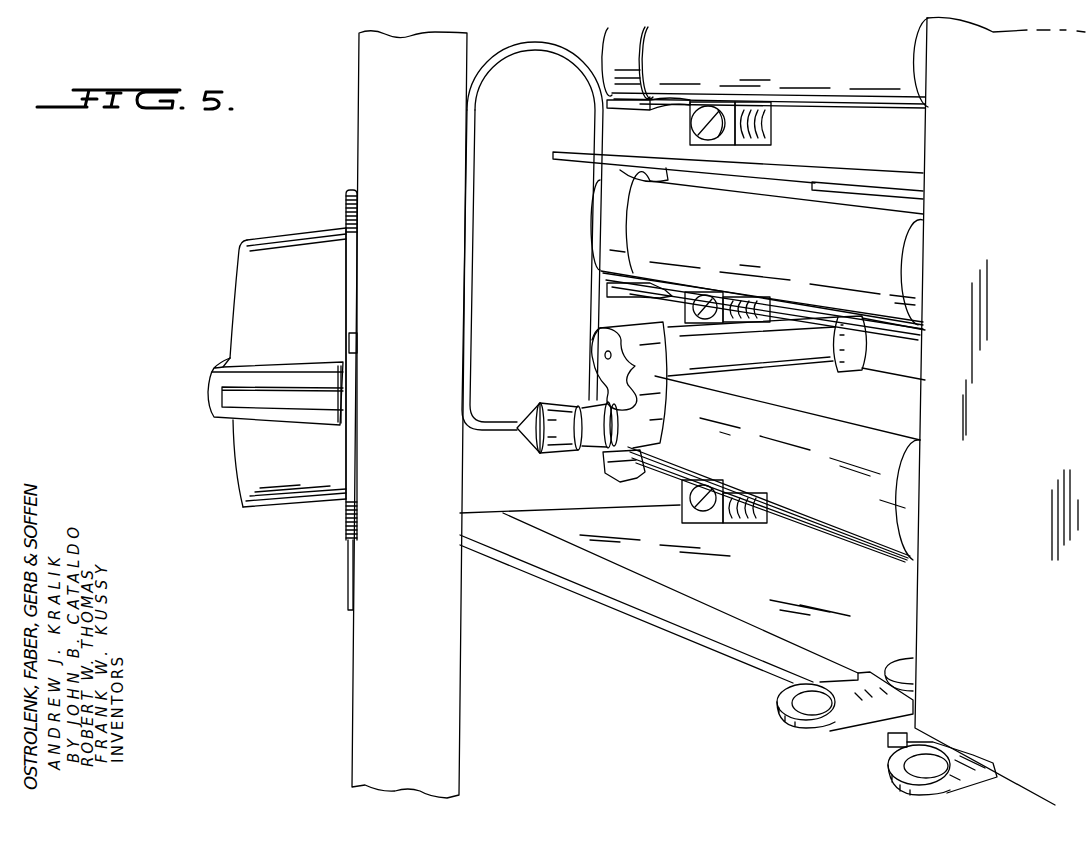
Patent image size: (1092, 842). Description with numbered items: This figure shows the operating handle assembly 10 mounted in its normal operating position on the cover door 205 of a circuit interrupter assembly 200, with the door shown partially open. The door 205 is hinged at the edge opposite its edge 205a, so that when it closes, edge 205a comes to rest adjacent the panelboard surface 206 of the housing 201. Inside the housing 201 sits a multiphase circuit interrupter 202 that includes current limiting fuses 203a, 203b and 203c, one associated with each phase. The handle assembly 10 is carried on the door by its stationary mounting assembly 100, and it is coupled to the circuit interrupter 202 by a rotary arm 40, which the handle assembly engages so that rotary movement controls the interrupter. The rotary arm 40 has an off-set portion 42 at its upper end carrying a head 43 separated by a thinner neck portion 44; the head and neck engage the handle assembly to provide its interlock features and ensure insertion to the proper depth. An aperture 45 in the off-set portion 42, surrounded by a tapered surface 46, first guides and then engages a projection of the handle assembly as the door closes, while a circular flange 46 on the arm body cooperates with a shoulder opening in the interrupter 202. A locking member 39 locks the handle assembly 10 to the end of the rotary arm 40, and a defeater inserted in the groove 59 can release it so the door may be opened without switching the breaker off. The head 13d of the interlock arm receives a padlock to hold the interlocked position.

The handle assembly 10 is at (252, 545).
The head of arm 13d is at (226, 403).
The locking member 39 is at (226, 362).
The rotary arm 40 is at (771, 378).
The off-setting portion 42 is at (624, 385).
The head 43 is at (556, 453).
The neck portion 44 is at (590, 452).
The aperture 45 is at (605, 357).
The circular flange 46 is at (600, 333).
The groove 59 is at (360, 341).
The stationary mounting assembly 100 is at (352, 190).
The circuit interrupter assembly 200 is at (640, 684).
The housing 201 is at (558, 580).
The circuit interrupter 202 is at (586, 237).
The current limiting fuse 203a is at (858, 93).
The current limiting fuse 203b is at (880, 322).
The current limiting fuse 203c is at (820, 523).
The cover door 205 is at (346, 580).
The edge of door 205a is at (358, 664).
The panelboard surface 206 is at (1010, 560).